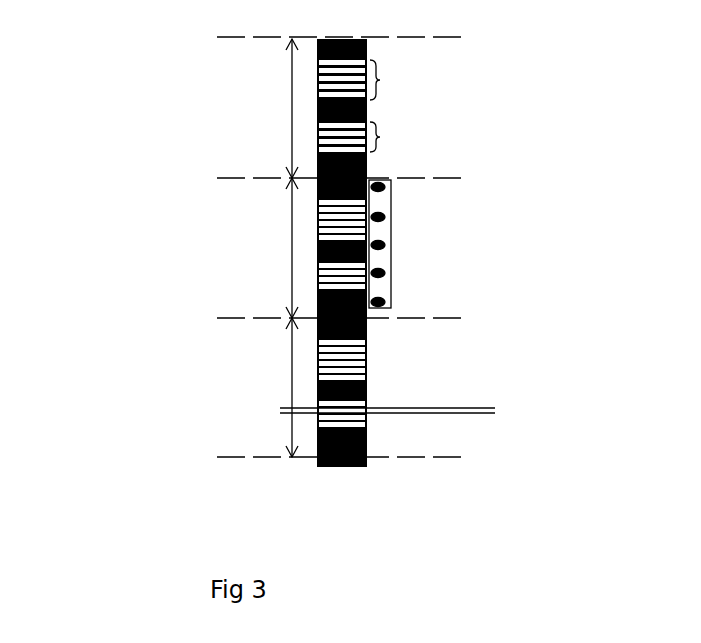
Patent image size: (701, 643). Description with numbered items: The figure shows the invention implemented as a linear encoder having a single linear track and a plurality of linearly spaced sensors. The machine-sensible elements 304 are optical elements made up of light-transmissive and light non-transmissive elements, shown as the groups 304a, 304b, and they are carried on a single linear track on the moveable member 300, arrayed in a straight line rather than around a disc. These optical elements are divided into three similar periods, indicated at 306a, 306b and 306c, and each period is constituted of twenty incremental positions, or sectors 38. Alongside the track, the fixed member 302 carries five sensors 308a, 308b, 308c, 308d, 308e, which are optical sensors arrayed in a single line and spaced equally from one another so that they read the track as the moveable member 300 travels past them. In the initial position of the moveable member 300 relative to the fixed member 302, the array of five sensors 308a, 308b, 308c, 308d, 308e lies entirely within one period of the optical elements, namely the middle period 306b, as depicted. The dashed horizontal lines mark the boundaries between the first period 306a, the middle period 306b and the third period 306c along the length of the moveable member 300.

The moveable member 300 is at (275, 253).
The fixed member 302 is at (509, 217).
The machine-sensible elements 304 is at (425, 240).
The light-transmissive elements 304a is at (377, 80).
The light non-transmissive elements 304b is at (300, 121).
The first period 306a is at (271, 108).
The middle period 306b is at (270, 248).
The third period 306c is at (271, 387).
The sensor 308a is at (392, 185).
The sensor 308b is at (392, 213).
The sensor 308c is at (392, 243).
The sensor 308d is at (392, 272).
The sensor 308e is at (392, 303).
The incremental positions (sectors) 38 is at (389, 397).